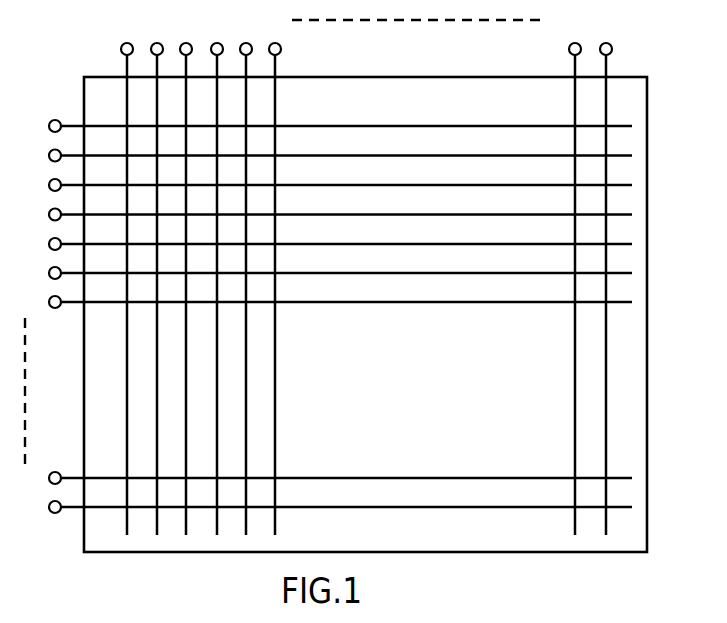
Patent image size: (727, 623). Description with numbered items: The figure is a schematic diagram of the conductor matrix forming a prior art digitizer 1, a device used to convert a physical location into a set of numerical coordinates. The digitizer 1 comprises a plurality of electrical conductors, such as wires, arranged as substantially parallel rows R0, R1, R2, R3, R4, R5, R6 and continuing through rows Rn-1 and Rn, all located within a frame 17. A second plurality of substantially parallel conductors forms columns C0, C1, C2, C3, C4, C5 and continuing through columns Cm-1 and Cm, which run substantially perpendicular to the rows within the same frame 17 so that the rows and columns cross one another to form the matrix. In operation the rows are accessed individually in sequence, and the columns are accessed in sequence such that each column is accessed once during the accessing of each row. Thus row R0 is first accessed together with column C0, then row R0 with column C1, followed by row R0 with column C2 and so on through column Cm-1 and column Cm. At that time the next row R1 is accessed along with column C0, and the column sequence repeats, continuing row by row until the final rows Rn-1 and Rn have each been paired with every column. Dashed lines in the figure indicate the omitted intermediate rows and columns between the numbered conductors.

The digitizer 1 is at (352, 269).
The frame 17 is at (647, 530).
The row R0 is at (320, 126).
The row R1 is at (320, 156).
The row R2 is at (320, 185).
The row R3 is at (320, 215).
The row R4 is at (320, 244).
The row R5 is at (320, 273).
The row R6 is at (320, 302).
The row Rn-1 is at (320, 478).
The row Rn is at (320, 507).
The column C0 is at (124, 269).
The column C1 is at (154, 269).
The column C2 is at (185, 269).
The column C3 is at (215, 269).
The column C4 is at (244, 269).
The column C5 is at (272, 269).
The column Cm-1 is at (575, 269).
The column Cm is at (646, 209).